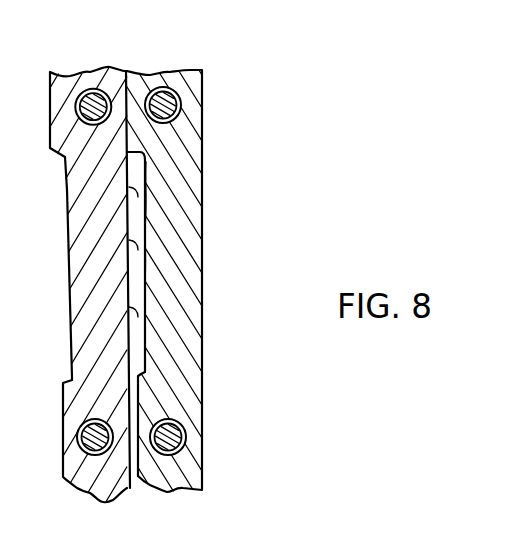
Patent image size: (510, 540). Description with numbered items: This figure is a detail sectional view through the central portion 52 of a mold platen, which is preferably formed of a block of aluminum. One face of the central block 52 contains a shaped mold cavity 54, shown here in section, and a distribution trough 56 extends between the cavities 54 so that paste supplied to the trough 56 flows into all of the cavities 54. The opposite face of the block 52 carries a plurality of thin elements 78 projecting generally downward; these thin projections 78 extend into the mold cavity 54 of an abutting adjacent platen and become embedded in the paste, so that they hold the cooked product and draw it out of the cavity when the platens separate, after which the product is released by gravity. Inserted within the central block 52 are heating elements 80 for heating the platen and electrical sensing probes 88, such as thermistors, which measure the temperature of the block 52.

The central portion 52 is at (202, 240).
The shaped cavities 54 is at (140, 287).
The distribution trough 56 is at (140, 405).
The thin elements 78 is at (148, 184).
The heating elements 80 is at (181, 100).
The electrical sensing probe 88 is at (82, 420).